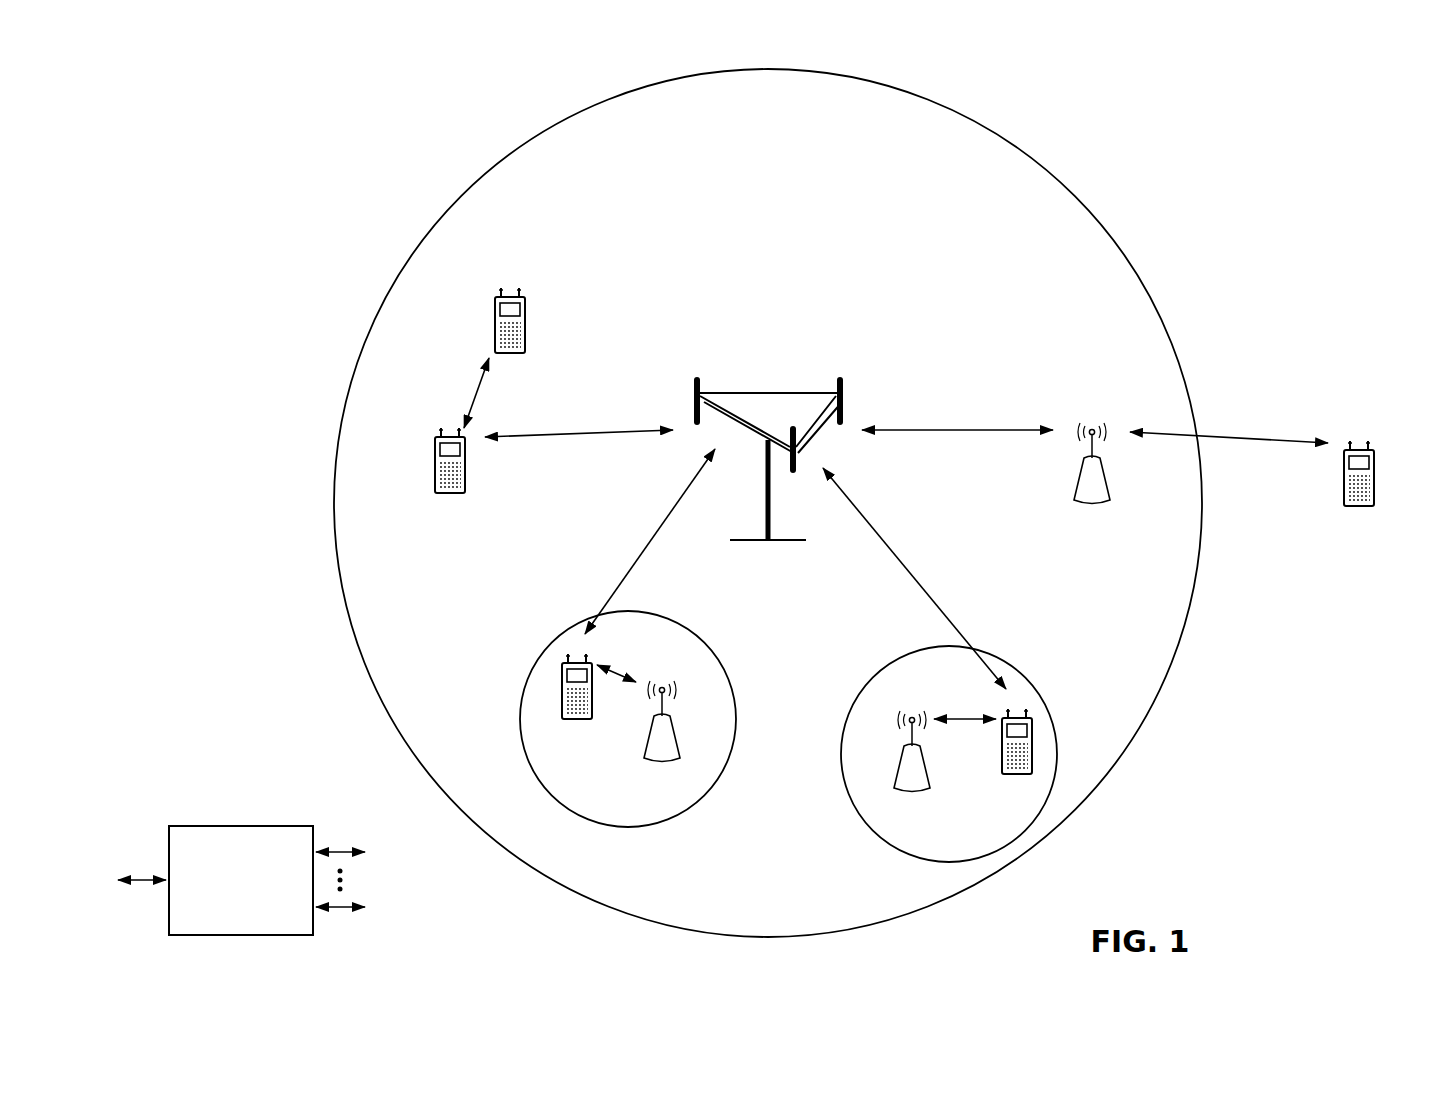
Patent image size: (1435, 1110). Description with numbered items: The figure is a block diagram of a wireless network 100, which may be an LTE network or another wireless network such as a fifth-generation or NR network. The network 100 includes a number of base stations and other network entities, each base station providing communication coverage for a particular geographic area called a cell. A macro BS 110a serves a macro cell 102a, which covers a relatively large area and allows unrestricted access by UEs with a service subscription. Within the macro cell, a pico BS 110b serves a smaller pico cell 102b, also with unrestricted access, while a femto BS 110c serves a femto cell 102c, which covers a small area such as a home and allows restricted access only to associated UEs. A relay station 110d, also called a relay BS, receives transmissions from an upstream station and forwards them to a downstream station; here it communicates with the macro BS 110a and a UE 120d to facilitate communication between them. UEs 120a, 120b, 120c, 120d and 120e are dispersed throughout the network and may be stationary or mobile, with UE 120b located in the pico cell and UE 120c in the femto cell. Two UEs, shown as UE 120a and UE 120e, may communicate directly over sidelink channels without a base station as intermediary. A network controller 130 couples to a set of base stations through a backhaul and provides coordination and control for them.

The wireless network 100 is at (1246, 164).
The macro cell 102a is at (1066, 180).
The pico cell 102b is at (716, 632).
The femto cell 102c is at (864, 680).
The macro BS 110a is at (774, 381).
The pico BS 110b is at (690, 736).
The femto BS 110c is at (894, 775).
The relay station 110d is at (1093, 430).
The UE 120a is at (432, 448).
The UE 120b is at (560, 712).
The UE 120c is at (1002, 766).
The UE 120d is at (1374, 459).
The UE 120e is at (492, 306).
The network controller 130 is at (238, 826).